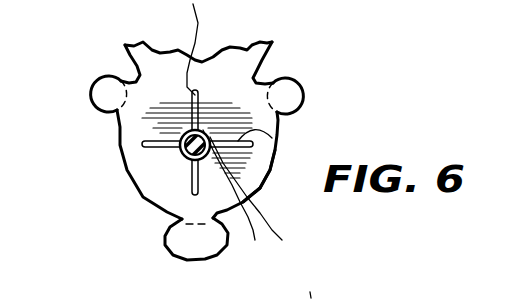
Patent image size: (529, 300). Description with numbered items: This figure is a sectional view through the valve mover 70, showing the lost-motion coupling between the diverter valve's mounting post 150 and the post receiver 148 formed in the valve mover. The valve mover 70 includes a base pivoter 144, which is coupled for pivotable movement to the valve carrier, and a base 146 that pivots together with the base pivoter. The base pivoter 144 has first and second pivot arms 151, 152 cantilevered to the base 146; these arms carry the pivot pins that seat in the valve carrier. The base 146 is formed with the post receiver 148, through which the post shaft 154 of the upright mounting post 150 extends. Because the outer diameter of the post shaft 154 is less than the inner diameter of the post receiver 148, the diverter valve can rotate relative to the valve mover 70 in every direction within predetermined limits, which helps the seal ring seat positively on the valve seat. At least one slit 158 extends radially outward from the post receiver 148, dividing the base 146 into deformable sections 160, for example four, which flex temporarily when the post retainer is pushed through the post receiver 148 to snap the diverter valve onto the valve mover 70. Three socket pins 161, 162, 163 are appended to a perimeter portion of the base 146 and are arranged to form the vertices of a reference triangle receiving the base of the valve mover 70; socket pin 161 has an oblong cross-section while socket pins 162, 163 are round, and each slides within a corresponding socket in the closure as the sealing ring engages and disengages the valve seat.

The valve mover 70 is at (278, 173).
The base pivoter 144 is at (114, 45).
The base 146 is at (118, 178).
The post receiver 148 is at (278, 124).
The mounting post 150 is at (178, 177).
The first pivot arm 151 is at (143, 43).
The second pivot arm 152 is at (238, 48).
The post shaft 154 is at (258, 192).
The slit 158 is at (288, 145).
The deformable sections 160 is at (203, 108).
The socket pin 161 is at (205, 245).
The socket pin 162 is at (102, 92).
The socket pin 163 is at (320, 83).